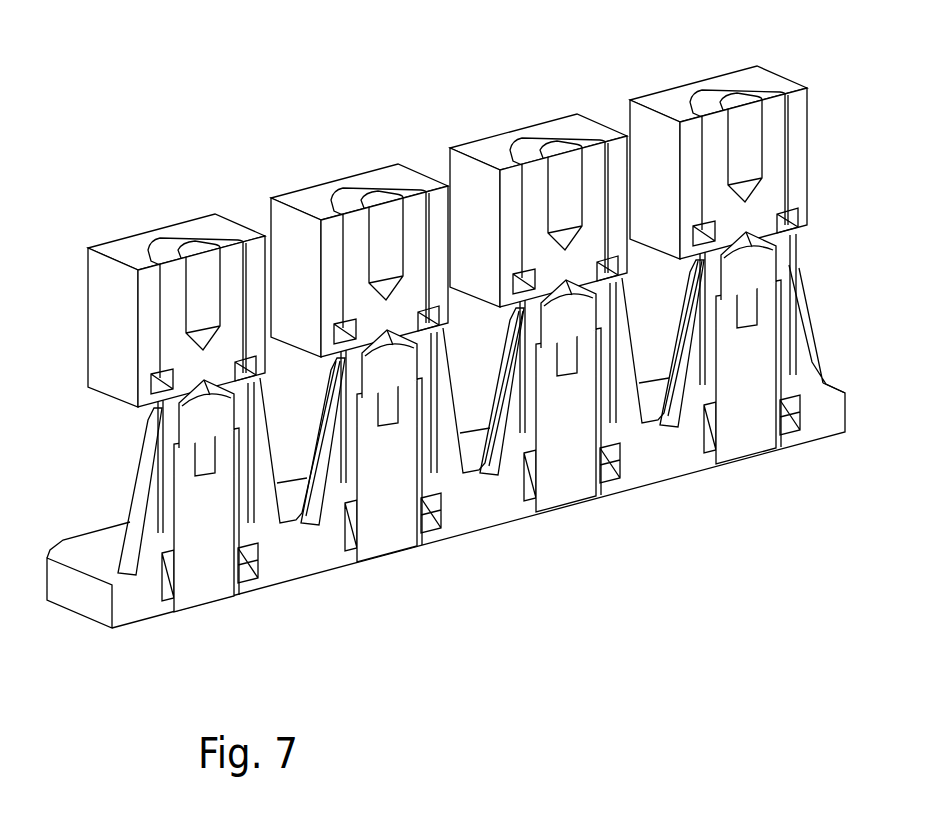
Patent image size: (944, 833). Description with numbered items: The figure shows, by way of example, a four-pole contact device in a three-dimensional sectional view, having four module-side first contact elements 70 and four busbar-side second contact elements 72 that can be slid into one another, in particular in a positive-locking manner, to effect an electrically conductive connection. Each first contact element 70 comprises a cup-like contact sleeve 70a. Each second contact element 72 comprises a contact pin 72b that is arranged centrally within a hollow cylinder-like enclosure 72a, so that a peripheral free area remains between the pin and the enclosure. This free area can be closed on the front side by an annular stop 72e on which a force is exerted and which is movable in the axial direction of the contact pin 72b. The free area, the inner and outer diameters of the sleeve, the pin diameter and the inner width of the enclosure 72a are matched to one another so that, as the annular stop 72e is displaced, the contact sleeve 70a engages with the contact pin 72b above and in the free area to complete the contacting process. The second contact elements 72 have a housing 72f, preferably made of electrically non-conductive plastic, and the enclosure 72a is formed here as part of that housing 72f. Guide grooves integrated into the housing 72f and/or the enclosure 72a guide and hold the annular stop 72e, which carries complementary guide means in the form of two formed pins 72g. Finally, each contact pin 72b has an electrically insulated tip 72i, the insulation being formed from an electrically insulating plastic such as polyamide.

The first contact element 70 is at (118, 238).
The contact sleeve 70a is at (183, 485).
The second contact element 72 is at (142, 443).
The enclosure 72a is at (298, 523).
The contact pin 72b is at (263, 438).
The annular stop 72e is at (157, 562).
The housing 72f is at (67, 595).
The formed pins 72g is at (442, 475).
The insulated tip 72i is at (205, 417).